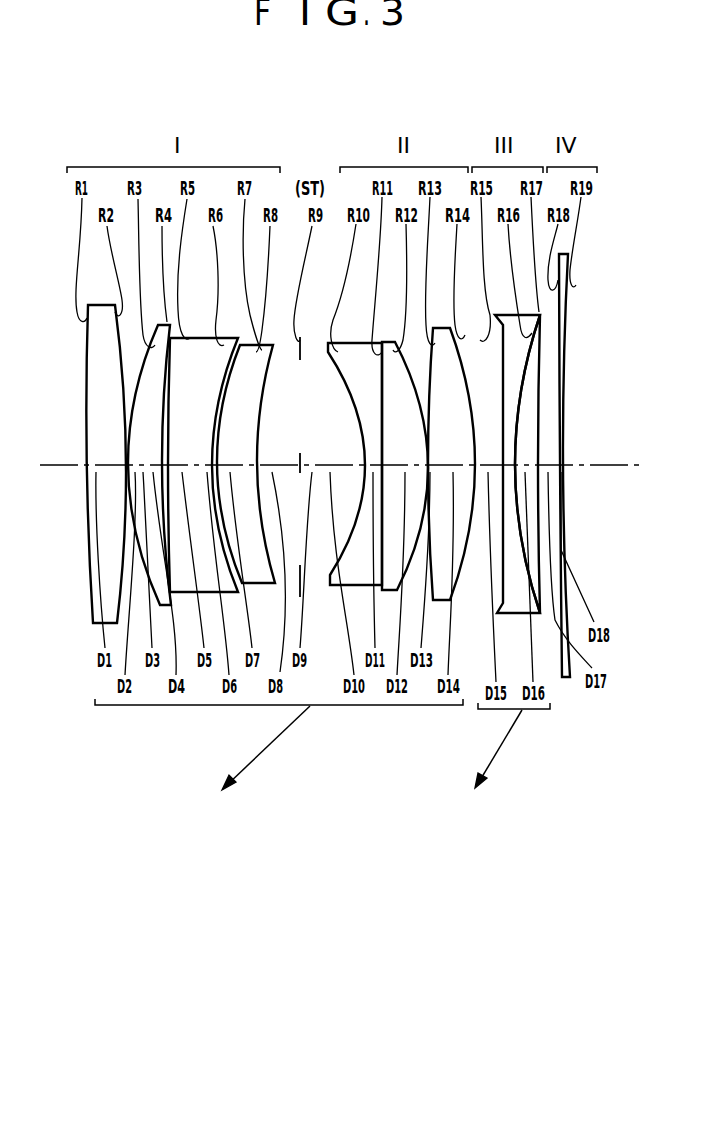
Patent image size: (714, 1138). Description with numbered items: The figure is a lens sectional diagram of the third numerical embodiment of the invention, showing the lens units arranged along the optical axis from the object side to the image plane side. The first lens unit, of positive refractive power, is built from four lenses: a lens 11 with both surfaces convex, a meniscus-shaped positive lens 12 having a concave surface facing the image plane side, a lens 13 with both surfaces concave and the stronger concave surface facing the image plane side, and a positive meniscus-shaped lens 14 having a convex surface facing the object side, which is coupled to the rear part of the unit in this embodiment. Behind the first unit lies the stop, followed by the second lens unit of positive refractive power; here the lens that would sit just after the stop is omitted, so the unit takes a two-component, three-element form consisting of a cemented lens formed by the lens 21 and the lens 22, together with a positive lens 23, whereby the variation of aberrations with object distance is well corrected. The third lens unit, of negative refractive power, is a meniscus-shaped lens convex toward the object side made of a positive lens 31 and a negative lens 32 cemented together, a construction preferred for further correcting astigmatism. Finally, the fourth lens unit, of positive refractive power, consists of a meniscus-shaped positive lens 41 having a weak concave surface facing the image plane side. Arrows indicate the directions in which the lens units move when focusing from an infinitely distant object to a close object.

The lens 11 is at (100, 347).
The meniscus-shaped positive lens 12 is at (147, 388).
The lens 13 is at (183, 420).
The positive meniscus-shaped lens 14 is at (232, 433).
The lens of cemented lens 21 is at (358, 378).
The lens of cemented lens 22 is at (400, 410).
The positive lens 23 is at (450, 433).
The positive lens 31 is at (493, 368).
The negative lens 32 is at (510, 403).
The meniscus-shaped positive lens 41 is at (552, 442).